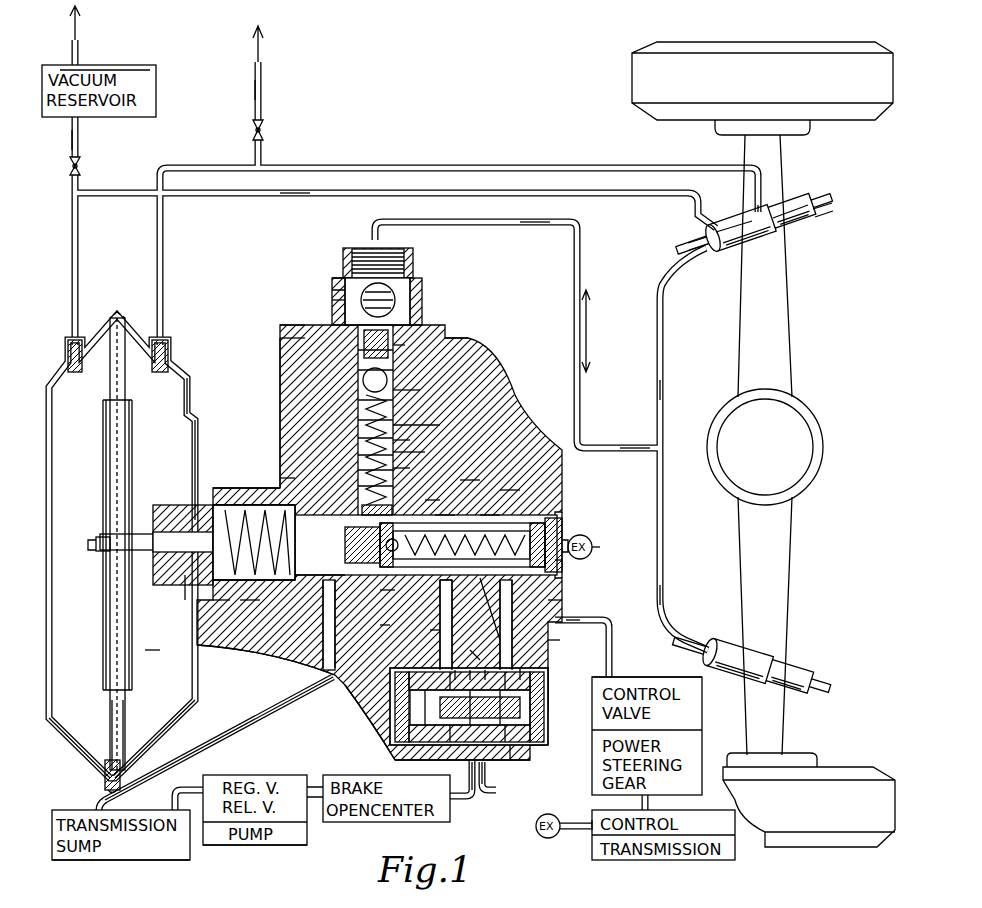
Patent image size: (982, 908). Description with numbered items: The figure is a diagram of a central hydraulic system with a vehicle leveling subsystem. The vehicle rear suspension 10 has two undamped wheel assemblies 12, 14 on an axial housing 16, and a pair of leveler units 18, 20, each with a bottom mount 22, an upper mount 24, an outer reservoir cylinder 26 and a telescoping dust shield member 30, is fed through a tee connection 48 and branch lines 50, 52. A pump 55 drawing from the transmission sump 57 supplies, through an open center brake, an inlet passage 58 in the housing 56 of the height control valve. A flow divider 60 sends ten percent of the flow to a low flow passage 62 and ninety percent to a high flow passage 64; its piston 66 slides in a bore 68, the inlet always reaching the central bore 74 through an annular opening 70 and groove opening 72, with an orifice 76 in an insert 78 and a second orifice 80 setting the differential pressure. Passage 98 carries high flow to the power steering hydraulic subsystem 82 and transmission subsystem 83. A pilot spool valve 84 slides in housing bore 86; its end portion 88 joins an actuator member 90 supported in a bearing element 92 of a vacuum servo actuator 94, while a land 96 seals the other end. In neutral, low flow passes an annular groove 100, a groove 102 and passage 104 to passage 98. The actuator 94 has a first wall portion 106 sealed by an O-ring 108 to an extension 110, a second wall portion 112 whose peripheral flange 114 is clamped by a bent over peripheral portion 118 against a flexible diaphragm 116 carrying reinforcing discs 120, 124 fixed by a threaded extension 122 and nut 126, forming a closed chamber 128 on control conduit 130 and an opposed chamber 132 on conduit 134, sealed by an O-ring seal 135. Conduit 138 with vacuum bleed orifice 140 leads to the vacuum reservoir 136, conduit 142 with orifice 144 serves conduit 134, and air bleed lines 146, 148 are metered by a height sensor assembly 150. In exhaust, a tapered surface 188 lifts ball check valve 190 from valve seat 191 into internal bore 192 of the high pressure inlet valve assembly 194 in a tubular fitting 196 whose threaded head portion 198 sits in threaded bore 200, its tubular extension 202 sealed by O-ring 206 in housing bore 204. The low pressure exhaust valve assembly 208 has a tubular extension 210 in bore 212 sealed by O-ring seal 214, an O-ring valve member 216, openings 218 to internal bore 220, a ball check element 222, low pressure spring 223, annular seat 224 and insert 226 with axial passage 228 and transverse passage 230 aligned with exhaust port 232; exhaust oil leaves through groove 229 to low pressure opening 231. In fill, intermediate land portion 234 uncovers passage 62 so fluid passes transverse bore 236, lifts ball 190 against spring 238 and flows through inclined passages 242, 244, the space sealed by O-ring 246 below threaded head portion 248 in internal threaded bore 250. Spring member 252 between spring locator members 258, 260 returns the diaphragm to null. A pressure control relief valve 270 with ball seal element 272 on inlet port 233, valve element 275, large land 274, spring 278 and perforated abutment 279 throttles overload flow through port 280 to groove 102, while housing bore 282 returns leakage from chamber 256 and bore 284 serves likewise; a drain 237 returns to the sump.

The vehicle rear suspension 10 is at (755, 69).
The wheel assembly 12 is at (762, 94).
The wheel assembly 14 is at (809, 782).
The axial housing 16 is at (772, 425).
The leveler unit 18 is at (754, 209).
The leveler unit 20 is at (757, 661).
The bottom mount 22 is at (843, 218).
The upper mount 24 is at (684, 229).
The outer reservoir cylinder 26 is at (804, 233).
The dust shield member 30 is at (726, 254).
The tee connection 48 is at (635, 424).
The branch line 50 is at (684, 383).
The branch line 52 is at (684, 588).
The pump 55 is at (265, 849).
The housing 56 is at (379, 504).
The transmission sump 57 is at (121, 869).
The inlet passage 58 is at (462, 765).
The flow divider 60 is at (487, 785).
The low flow passage 62 is at (426, 625).
The high flow passage 64 is at (534, 630).
The piston 66 is at (506, 775).
The bore 68 is at (532, 759).
The annular opening 70 is at (455, 658).
The groove opening 72 is at (482, 664).
The central bore 74 is at (522, 664).
The orifice 76 is at (457, 673).
The insert 78 is at (370, 722).
The second orifice 80 is at (485, 706).
The power steering hydraulic subsystem 82 is at (667, 697).
The transmission subsystem 83 is at (575, 804).
The pilot spool valve 84 is at (472, 524).
The housing bore 86 is at (577, 523).
The end portion 88 is at (292, 531).
The actuator member 90 is at (254, 519).
The bearing element 92 is at (180, 523).
The vacuum servo actuator 94 is at (200, 374).
The land 96 is at (578, 529).
The passage 98 is at (582, 602).
The annular groove 100 is at (424, 626).
The groove 102 is at (531, 472).
The passage 104 is at (532, 600).
The first wall portion 106 is at (217, 449).
The O-ring 108 is at (242, 454).
The extension 110 is at (254, 500).
The second wall portion 112 is at (279, 543).
The peripheral flange 114 is at (77, 786).
The flexible diaphragm 116 is at (144, 729).
The bent over peripheral portion 118 is at (79, 771).
The reinforcing disc 120 is at (149, 541).
The threaded extension 122 is at (80, 563).
The reinforcing disc 124 is at (101, 545).
The nut 126 is at (191, 525).
The closed chamber 128 is at (69, 745).
The control conduit 130 is at (57, 342).
The opposed chamber 132 is at (181, 730).
The conduit 134 is at (186, 336).
The O-ring seal 135 is at (162, 595).
The vacuum reservoir 136 is at (124, 45).
The conduit 138 is at (50, 139).
The vacuum bleed orifice 140 is at (110, 153).
The conduit 142 is at (289, 81).
The vacuum bleed orifice 144 is at (289, 120).
The first air bleed line 146 is at (527, 238).
The second air bleed line 148 is at (275, 206).
The height sensor assembly 150 is at (726, 192).
The tapered surface 188 is at (400, 598).
The ball check valve 190 is at (405, 497).
The valve seat 191 is at (360, 534).
The internal bore 192 is at (423, 465).
The high pressure inlet valve assembly 194 is at (450, 448).
The tubular fitting 196 is at (445, 385).
The threaded head portion 198 is at (486, 351).
The internally threaded bore 200 is at (267, 413).
The tubular extension 202 is at (352, 465).
The housing bore 204 is at (307, 472).
The O-ring 206 is at (352, 483).
The low pressure exhaust valve assembly 208 is at (451, 338).
The tubular extension 210 is at (456, 420).
The bore 212 is at (423, 437).
The O-ring seal 214 is at (346, 450).
The annular rubber O-ring valve member 216 is at (346, 413).
The openings 218 is at (349, 431).
The internal bore 220 is at (407, 395).
The ball check element 222 is at (428, 373).
The low pressure spring 223 is at (420, 450).
The annular seat 224 is at (341, 371).
The insert 226 is at (426, 329).
The axial passage 228 is at (285, 327).
The groove 229 is at (353, 624).
The transverse passage 230 is at (341, 351).
The low pressure opening 231 is at (266, 649).
The exhaust port 232 is at (283, 311).
The inlet port 233 is at (355, 545).
The intermediate land portion 234 is at (464, 502).
The transverse bore 236 is at (370, 633).
The drain conduit 237 is at (219, 738).
The spring 238 is at (454, 486).
The inclined passage 242 is at (323, 292).
The inclined passage 244 is at (424, 277).
The O-ring 246 is at (435, 303).
The threaded head portion 248 is at (414, 290).
The internal threaded bore 250 is at (320, 275).
The spring member 252 is at (227, 605).
The chamber 256 is at (231, 512).
The spring locator member 258 is at (166, 636).
The spring locator member 260 is at (329, 571).
The pressure control relief valve 270 is at (509, 496).
The ball seal element 272 is at (434, 593).
The large land 274 is at (485, 624).
The valve element 275 is at (496, 467).
The spring 278 is at (583, 572).
The perforated abutment 279 is at (620, 557).
The port 280 is at (491, 644).
The housing bore 282 is at (268, 605).
The bore 284 is at (594, 529).